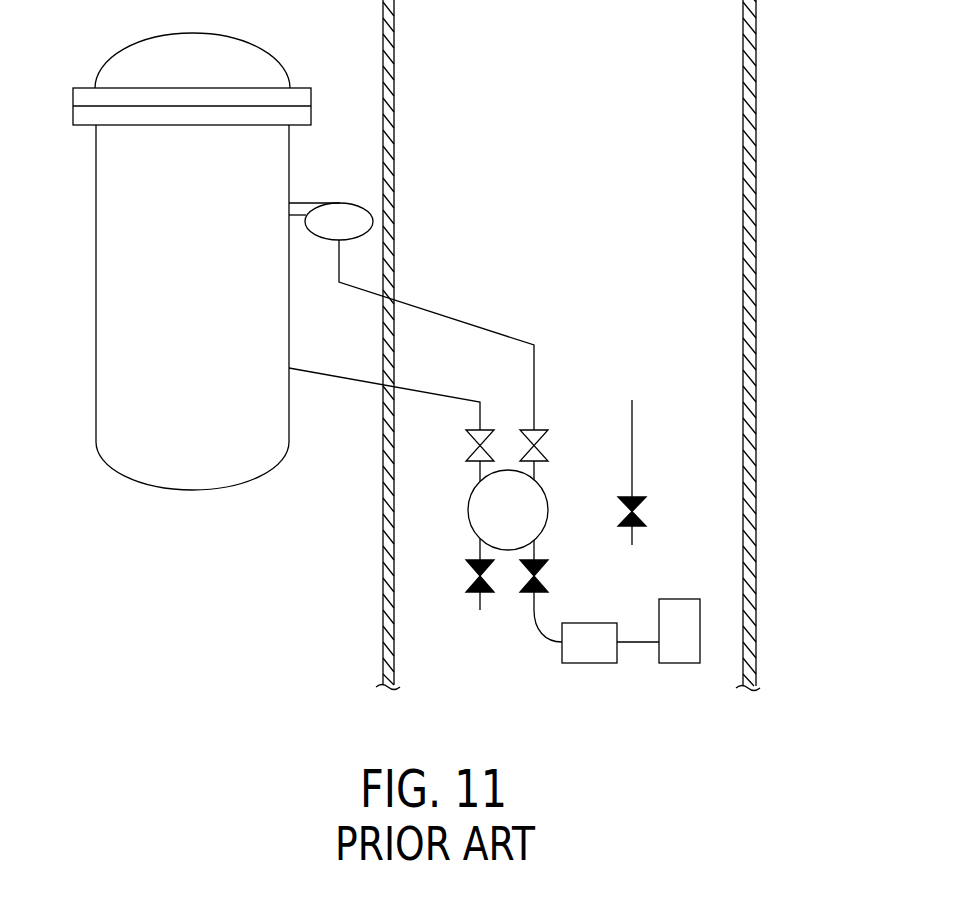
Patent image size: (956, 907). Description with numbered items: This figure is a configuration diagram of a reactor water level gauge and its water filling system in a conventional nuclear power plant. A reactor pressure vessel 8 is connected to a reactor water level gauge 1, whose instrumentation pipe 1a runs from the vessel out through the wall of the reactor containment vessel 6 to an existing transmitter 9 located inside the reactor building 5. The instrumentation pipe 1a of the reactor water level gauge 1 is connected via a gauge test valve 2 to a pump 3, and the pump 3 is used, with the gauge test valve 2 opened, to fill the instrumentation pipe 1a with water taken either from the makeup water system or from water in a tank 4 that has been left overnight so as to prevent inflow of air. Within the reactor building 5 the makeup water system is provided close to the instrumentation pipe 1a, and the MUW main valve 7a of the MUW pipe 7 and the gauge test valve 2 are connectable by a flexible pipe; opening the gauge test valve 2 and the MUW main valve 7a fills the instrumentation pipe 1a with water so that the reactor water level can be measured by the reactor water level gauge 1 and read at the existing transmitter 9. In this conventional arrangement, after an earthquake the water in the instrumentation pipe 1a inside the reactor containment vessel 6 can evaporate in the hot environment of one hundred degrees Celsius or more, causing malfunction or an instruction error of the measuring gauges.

The reactor pressure vessel 8 is at (268, 55).
The reactor water level gauge 1 is at (331, 203).
The instrumentation pipe 1a is at (465, 321).
The existing transmitter 9 is at (468, 509).
The gauge test valve 2 is at (468, 580).
The pump 3 is at (589, 623).
The tank 4 is at (680, 599).
The MUW pipe 7 is at (632, 436).
The MUW main valve 7a is at (638, 498).
The reactor containment vessel 6 is at (395, 70).
The reactor building 5 is at (757, 70).